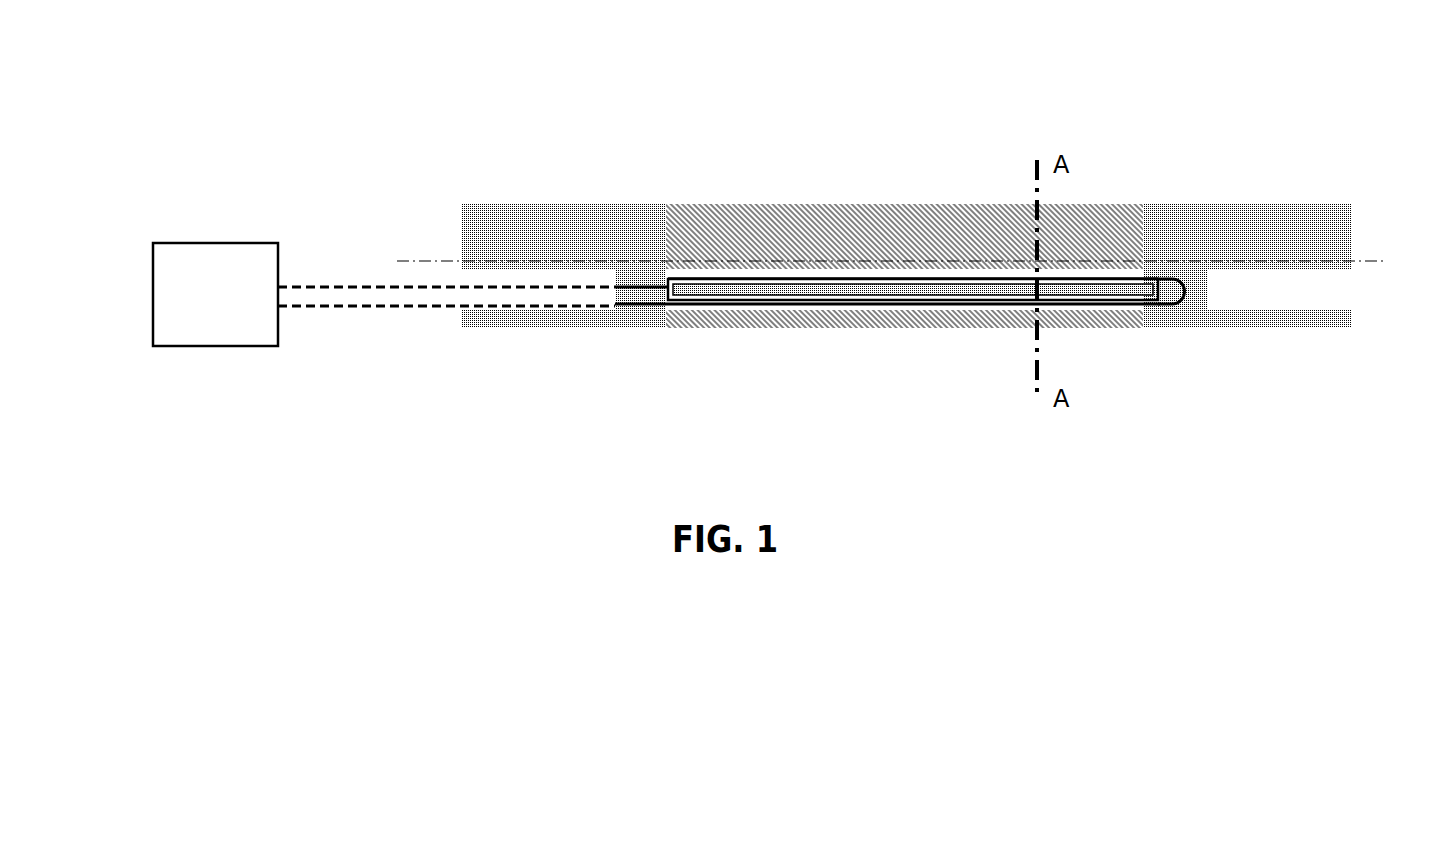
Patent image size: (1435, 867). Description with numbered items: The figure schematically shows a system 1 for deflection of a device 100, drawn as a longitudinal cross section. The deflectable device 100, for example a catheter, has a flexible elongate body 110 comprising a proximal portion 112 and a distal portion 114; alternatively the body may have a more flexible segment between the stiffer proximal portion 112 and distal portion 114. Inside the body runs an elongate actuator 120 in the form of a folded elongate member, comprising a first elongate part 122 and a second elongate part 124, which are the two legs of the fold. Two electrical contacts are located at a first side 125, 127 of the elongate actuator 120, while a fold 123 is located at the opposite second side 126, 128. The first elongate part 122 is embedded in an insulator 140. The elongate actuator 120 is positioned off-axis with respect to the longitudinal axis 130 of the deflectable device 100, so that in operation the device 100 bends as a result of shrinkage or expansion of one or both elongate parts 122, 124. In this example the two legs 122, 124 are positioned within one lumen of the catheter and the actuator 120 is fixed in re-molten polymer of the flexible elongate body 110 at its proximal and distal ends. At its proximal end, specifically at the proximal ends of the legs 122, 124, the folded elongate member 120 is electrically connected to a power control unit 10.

The system 1 is at (240, 75).
The power control unit 10 is at (215, 294).
The deflectable device 100 is at (486, 169).
The flexible elongate body 110 is at (728, 238).
The proximal portion 112 is at (553, 255).
The distal portion 114 is at (1238, 228).
The elongate actuator 120 is at (913, 358).
The first elongate part 122 is at (886, 392).
The fold 123 is at (1193, 301).
The second elongate part 124 is at (802, 301).
The first side 125 is at (637, 290).
The second side 126 is at (1166, 287).
The first side 127 is at (649, 302).
The second side 128 is at (1158, 306).
The longitudinal axis 130 is at (437, 259).
The insulator 140 is at (952, 278).